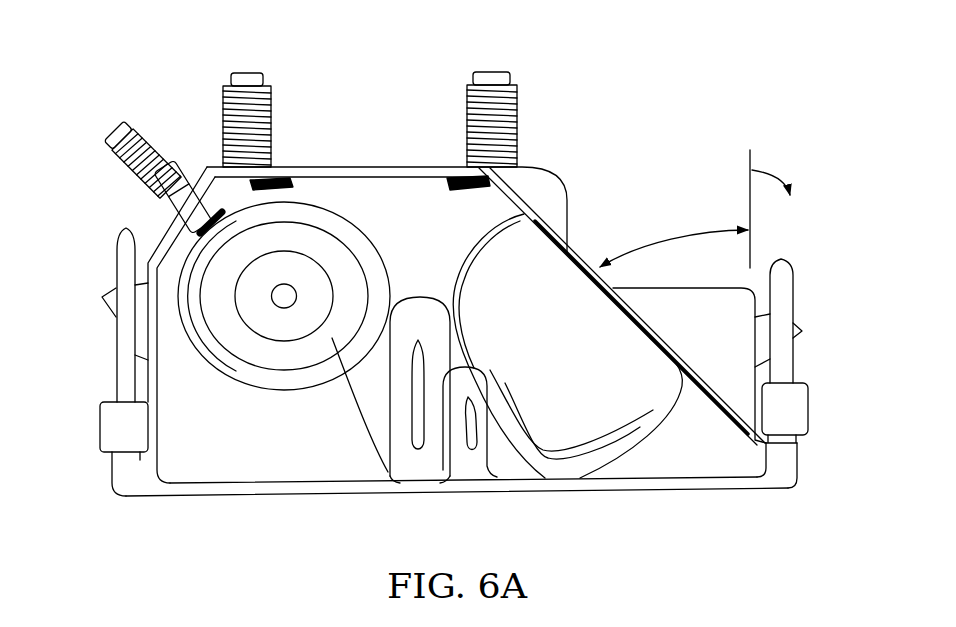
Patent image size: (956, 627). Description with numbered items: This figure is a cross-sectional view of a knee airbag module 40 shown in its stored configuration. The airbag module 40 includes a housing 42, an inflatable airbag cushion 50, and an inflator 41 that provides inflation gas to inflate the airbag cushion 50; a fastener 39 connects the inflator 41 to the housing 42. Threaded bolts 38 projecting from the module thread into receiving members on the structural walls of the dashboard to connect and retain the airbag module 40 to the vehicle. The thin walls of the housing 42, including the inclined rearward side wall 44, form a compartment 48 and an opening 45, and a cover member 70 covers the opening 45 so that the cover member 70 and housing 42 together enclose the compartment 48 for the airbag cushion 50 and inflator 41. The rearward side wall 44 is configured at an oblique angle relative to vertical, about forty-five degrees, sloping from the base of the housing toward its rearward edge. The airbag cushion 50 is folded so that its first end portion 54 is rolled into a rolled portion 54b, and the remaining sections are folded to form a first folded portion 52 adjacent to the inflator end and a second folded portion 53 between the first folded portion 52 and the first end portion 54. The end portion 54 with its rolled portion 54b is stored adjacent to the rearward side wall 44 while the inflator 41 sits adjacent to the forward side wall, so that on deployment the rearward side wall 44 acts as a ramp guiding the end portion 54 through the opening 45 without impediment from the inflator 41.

The fastener 38 is at (240, 75).
The fastener 39 is at (116, 163).
The airbag module 40 is at (695, 103).
The inflator 41 is at (273, 385).
The housing 42 is at (322, 166).
The inclined rearward side wall 44 is at (582, 250).
The opening 45 is at (290, 487).
The compartment 48 is at (282, 428).
The airbag cushion 50 is at (528, 287).
The first folded portion 52 is at (403, 429).
The second folded portion 53 is at (512, 456).
The first end portion 54 is at (537, 257).
The rolled portion 54b is at (612, 366).
The cover member 70 is at (240, 490).